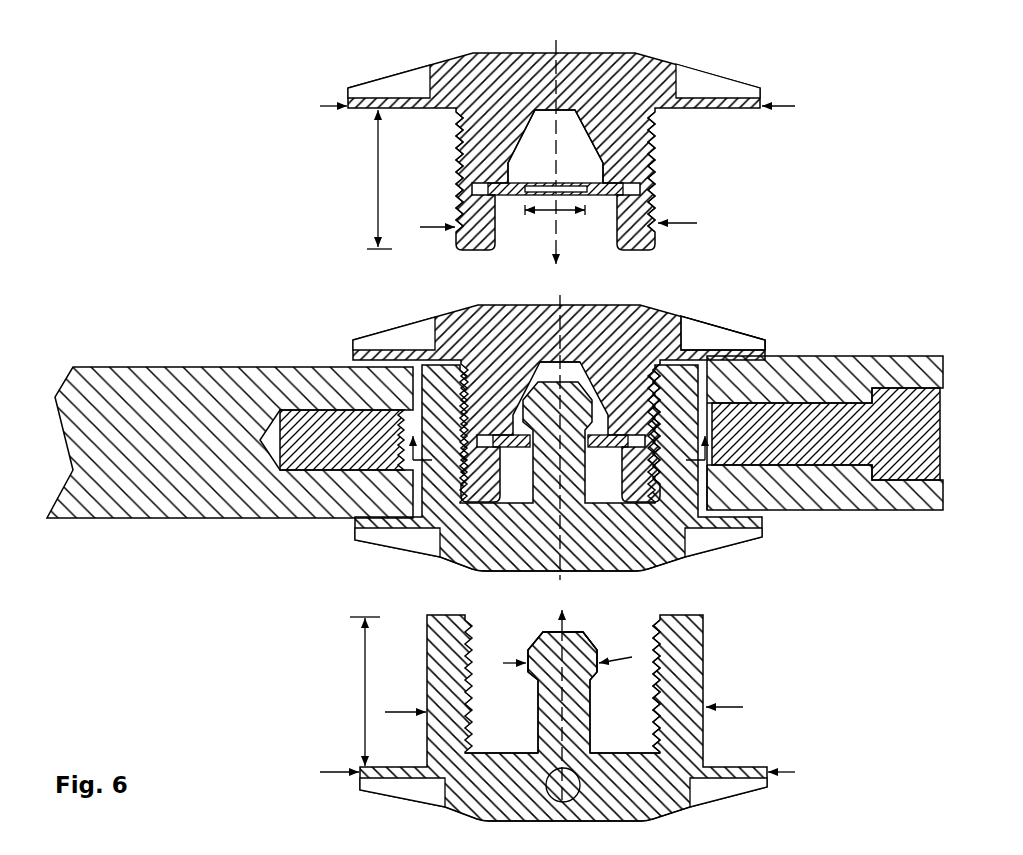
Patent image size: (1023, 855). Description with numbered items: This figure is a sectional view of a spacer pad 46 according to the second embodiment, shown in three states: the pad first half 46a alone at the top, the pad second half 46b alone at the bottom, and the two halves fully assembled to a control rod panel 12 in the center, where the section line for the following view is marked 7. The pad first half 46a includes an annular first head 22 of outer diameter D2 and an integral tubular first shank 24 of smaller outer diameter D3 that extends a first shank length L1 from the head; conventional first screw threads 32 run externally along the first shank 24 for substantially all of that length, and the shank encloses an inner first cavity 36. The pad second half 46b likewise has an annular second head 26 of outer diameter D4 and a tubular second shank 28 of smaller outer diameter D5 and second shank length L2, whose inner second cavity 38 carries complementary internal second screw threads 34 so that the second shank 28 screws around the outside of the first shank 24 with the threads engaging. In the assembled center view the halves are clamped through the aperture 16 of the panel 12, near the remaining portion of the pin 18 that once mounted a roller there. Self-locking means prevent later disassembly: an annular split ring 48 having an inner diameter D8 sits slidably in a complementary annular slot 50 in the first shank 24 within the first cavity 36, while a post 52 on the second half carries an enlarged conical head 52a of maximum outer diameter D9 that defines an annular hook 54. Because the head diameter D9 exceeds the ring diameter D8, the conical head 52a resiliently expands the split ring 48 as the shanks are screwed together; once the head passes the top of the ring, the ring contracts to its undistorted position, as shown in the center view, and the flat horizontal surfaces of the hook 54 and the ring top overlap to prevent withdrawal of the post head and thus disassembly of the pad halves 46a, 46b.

The panel 12 is at (205, 520).
The aperture 16 is at (706, 490).
The pin 18 is at (943, 417).
The first head 22 is at (648, 56).
The first shank 24 is at (658, 134).
The second head 26 is at (647, 821).
The second shank 28 is at (705, 661).
The first screw threads 32 is at (654, 158).
The second screw threads 34 is at (659, 689).
The first cavity 36 is at (548, 170).
The second cavity 38 is at (640, 740).
The spacer pad 46 is at (714, 313).
The pad first half 46a is at (570, 52).
The pad second half 46b is at (462, 818).
The split ring 48 is at (567, 186).
The annular slot 50 is at (637, 192).
The post 52 is at (537, 706).
The conical head 52a is at (556, 346).
The annular hook 54 is at (531, 676).
The section line 7- 7 is at (559, 438).
The first shank length L1 is at (377, 166).
The second shank length L2 is at (365, 678).
The first head outer diameter D2 is at (793, 106).
The first shank outer diameter D3 is at (697, 223).
The second head outer diameter D4 is at (795, 772).
The second shank outer diameter D5 is at (752, 694).
The ring inner diameter D8 is at (548, 213).
The head maximum outer diameter D9 is at (575, 649).